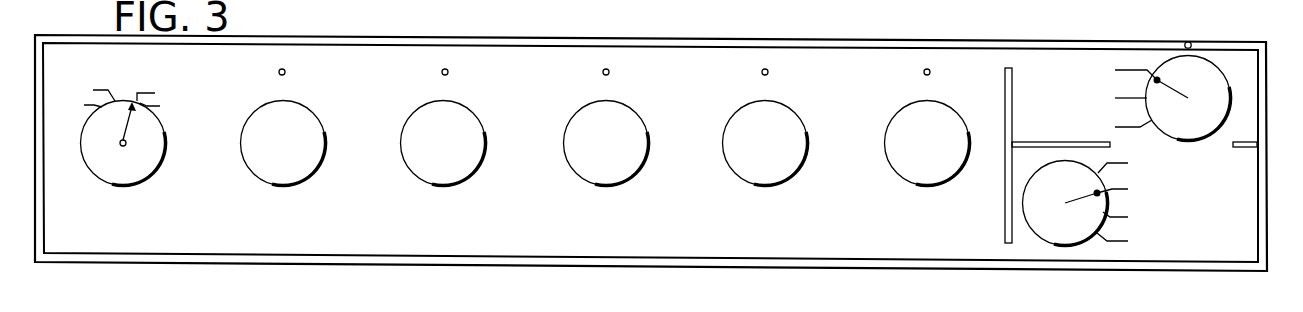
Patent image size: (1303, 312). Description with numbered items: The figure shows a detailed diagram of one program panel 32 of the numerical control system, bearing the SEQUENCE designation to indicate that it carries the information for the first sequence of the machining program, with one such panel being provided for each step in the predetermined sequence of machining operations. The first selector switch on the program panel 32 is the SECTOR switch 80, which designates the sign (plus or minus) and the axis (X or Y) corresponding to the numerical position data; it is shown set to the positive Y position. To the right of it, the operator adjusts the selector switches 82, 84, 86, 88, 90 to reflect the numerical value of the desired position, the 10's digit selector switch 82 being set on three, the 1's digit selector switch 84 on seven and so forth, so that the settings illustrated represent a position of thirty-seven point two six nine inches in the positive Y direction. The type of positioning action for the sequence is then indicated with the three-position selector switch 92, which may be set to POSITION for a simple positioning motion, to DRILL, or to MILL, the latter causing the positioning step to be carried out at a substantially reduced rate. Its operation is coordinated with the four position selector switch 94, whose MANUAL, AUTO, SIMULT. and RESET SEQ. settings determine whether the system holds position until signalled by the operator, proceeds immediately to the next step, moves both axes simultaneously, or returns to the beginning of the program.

The program panel 32 is at (813, 39).
The SECTOR switch 80 is at (167, 140).
The 10's digit selector switch 82 is at (319, 120).
The 1's digit selector switch 84 is at (479, 120).
The selector switch 86 is at (642, 120).
The selector switch 88 is at (801, 120).
The selector switch 90 is at (962, 114).
The three-position selector switch 92 is at (1230, 87).
The four position selector switch 94 is at (1027, 184).